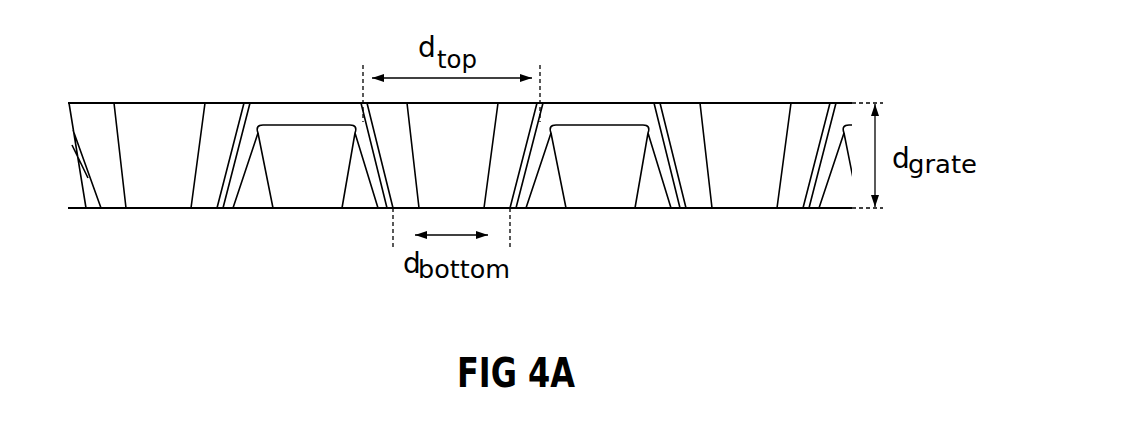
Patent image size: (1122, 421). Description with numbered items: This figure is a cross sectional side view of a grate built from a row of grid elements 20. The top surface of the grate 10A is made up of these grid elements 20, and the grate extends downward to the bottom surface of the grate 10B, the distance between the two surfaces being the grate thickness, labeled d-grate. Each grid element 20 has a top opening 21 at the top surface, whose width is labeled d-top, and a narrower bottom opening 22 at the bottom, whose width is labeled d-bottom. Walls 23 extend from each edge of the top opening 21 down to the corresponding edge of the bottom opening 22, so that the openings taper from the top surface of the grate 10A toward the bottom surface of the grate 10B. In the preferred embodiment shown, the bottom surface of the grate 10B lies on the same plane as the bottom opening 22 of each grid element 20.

The grid element 20 is at (463, 161).
The top opening 21 is at (162, 103).
The bottom opening 22 is at (148, 208).
The wall 23 is at (208, 185).
The top surface of the grate 10A is at (620, 100).
The bottom surface of the grate 10B is at (611, 213).